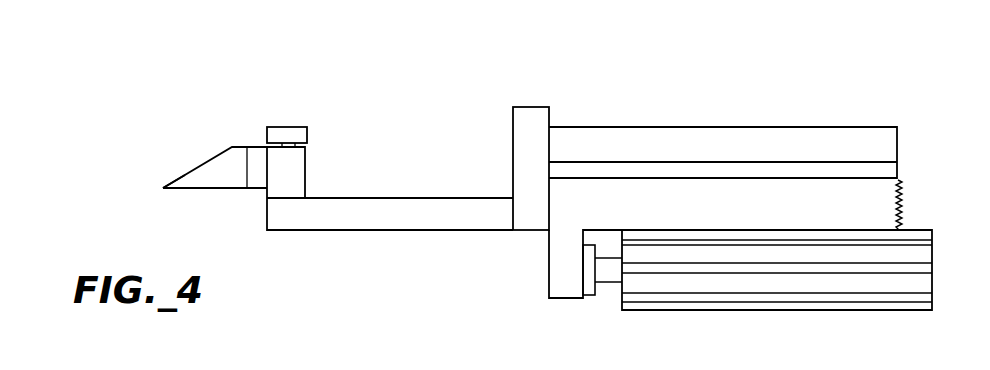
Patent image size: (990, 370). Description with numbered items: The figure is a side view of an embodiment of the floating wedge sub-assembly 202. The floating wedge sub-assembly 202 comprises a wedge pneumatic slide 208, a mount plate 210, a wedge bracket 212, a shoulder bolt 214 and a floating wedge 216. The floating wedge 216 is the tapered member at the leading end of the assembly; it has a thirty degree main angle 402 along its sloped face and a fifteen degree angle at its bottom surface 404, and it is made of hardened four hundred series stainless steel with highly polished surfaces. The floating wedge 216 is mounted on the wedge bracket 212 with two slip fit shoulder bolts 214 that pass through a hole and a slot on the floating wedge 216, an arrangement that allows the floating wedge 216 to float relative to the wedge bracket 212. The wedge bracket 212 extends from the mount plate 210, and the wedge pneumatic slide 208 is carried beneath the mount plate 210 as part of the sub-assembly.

The floating wedge sub-assembly 202 is at (212, 36).
The wedge pneumatic slide 208 is at (902, 192).
The mount plate 210 is at (602, 127).
The wedge bracket 212 is at (407, 198).
The shoulder bolt 214 is at (285, 127).
The floating wedge 216 is at (224, 147).
The main angle 402 is at (174, 183).
The bottom surface 404 is at (179, 194).